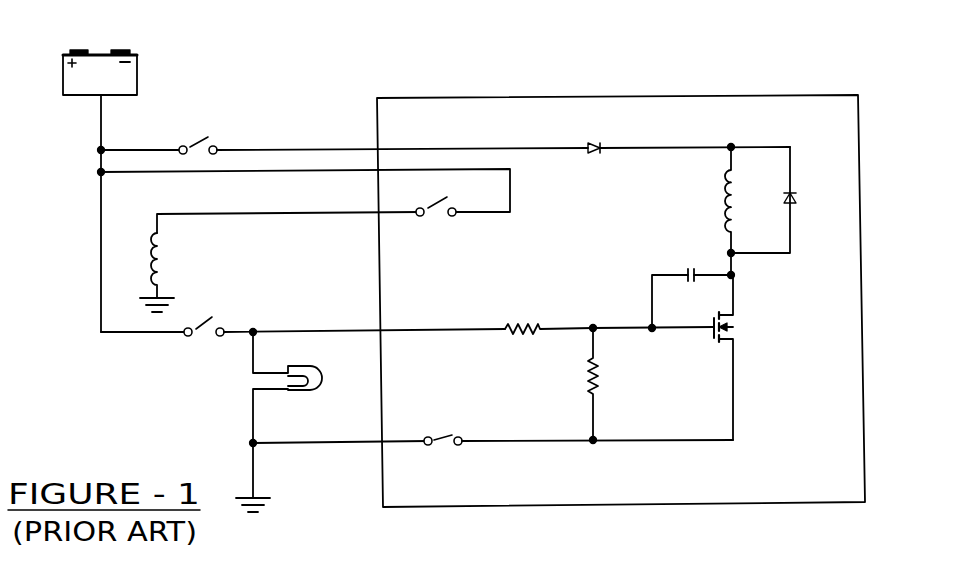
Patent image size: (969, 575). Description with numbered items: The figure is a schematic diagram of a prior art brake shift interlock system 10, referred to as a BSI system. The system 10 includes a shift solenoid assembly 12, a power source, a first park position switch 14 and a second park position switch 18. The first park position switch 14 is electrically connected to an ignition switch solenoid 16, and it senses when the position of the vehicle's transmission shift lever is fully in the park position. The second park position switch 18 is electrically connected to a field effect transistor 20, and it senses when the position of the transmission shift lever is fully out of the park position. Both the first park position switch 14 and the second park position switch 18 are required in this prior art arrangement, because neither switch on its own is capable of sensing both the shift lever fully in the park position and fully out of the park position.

The brake shift interlock system 10 is at (295, 40).
The shift solenoid assembly 12 is at (706, 96).
The first park position switch 14 is at (437, 203).
The ignition switch solenoid 16 is at (152, 233).
The second park position switch 18 is at (443, 441).
The field effect transistor 20 is at (712, 328).